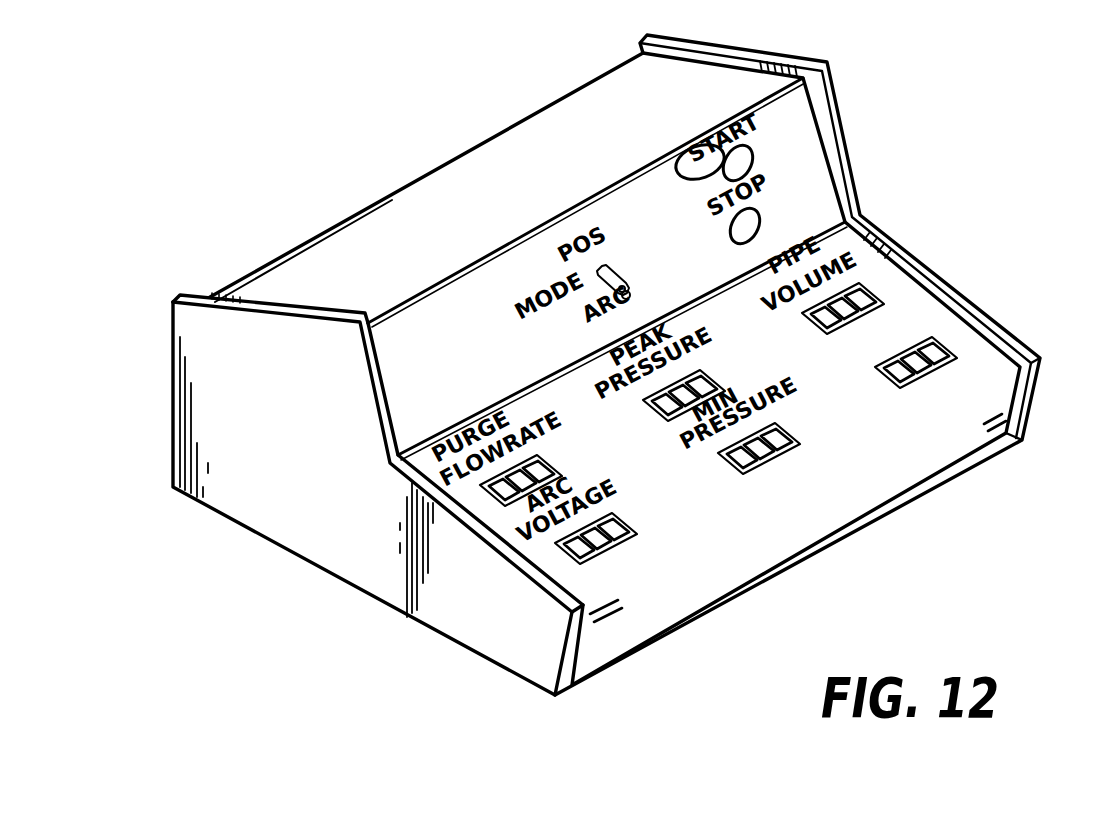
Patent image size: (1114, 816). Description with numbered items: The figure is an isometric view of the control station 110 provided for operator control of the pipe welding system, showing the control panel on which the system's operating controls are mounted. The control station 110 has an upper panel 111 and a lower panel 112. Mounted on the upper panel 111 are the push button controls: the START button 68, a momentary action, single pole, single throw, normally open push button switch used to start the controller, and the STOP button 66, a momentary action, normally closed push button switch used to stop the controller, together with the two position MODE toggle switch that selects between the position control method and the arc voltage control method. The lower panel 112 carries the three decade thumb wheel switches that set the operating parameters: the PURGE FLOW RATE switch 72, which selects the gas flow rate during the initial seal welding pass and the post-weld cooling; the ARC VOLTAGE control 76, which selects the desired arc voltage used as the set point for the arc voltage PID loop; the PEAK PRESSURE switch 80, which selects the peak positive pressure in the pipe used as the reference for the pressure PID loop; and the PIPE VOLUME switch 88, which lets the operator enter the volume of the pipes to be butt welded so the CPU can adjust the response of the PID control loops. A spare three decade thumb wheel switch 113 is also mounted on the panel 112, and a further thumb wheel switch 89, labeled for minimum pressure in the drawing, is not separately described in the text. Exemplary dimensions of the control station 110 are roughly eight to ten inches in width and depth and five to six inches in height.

The STOP button 66 is at (692, 144).
The START button 68 is at (730, 232).
The PURGE FLOW RATE switch 72 is at (558, 467).
The ARC VOLTAGE control 76 is at (630, 523).
The PEAK PRESSURE switch 80 is at (712, 380).
The PIPE VOLUME switch 88 is at (880, 297).
The minimum pressure display 89 is at (792, 435).
The control station 110 is at (924, 203).
The panel 111 is at (817, 162).
The panel 112 is at (993, 333).
The spare three decade thumb wheel switch 113 is at (955, 360).